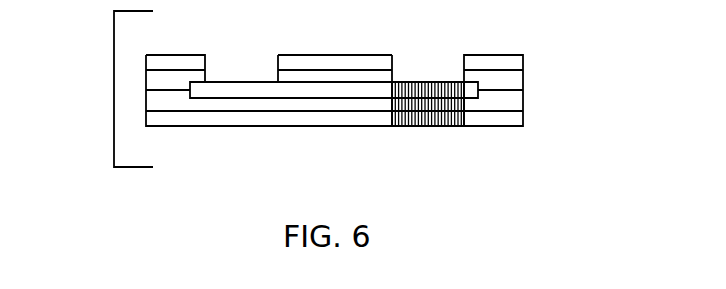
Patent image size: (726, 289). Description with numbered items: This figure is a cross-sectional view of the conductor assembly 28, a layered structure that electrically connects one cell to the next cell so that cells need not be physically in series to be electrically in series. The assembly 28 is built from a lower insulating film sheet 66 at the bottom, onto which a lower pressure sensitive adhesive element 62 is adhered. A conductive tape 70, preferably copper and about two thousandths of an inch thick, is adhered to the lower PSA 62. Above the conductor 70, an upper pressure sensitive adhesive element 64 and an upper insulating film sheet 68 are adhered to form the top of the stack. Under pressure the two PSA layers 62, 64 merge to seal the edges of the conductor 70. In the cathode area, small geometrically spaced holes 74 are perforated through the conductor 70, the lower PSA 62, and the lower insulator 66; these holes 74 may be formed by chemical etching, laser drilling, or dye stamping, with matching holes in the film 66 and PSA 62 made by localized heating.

The conductor assembly 28 is at (113, 92).
The lower pressure sensitive adhesive element 62 is at (523, 100).
The upper pressure sensitive adhesive element 64 is at (523, 77).
The lower insulating film sheet 66 is at (523, 125).
The upper insulating film sheet 68 is at (523, 55).
The conductive tape 70 is at (313, 88).
The holes 74 is at (423, 126).